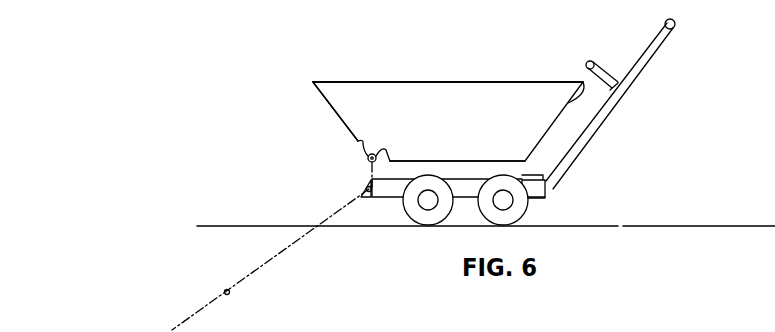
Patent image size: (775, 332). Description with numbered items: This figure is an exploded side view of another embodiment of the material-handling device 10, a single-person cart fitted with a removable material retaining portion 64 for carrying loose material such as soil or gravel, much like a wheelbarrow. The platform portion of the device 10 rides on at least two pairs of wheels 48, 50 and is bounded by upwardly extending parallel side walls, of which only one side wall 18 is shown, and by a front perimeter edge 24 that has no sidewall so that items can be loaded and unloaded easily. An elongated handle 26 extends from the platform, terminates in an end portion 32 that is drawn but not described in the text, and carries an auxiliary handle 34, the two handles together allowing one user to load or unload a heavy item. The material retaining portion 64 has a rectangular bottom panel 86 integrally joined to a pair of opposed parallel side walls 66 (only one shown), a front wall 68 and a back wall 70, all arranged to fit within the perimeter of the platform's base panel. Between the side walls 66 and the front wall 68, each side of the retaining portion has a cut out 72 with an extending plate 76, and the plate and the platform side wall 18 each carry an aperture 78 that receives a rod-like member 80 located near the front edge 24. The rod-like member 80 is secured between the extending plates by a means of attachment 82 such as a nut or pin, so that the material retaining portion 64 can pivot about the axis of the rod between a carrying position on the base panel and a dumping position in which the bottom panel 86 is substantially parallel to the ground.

The material-handling device 10 is at (290, 48).
The side wall 18 is at (467, 190).
The front perimeter edge 24 is at (360, 184).
The elongated handle 26 is at (623, 111).
The handle grip 32 is at (675, 24).
The auxiliary handle 34 is at (596, 59).
The wheels 48 is at (425, 232).
The wheels 50 is at (544, 231).
The material retaining portion 64 is at (306, 103).
The side walls 66 is at (450, 90).
The front wall 68 is at (337, 113).
The back wall 70 is at (583, 80).
The cut out 72 is at (360, 143).
The extending plate 76 is at (375, 152).
The aperture 78 is at (370, 200).
The rod-like member 80 is at (275, 258).
The means of attachment 82 is at (226, 289).
The bottom panel 86 is at (505, 135).